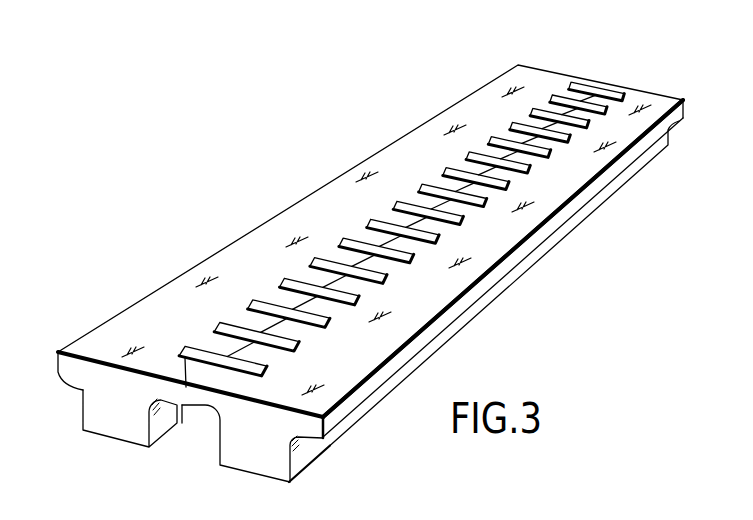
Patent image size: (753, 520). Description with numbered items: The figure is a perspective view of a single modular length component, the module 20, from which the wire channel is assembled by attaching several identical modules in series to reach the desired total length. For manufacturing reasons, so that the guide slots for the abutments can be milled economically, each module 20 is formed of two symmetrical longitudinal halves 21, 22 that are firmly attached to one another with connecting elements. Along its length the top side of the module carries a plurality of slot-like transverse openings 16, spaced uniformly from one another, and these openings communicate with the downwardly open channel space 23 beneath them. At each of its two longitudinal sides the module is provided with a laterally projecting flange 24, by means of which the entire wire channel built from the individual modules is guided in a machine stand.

The slot-like transverse openings 16 is at (188, 348).
The module 20 is at (545, 267).
The longitudinal half 21 is at (530, 78).
The longitudinal half 22 is at (639, 100).
The downwardly open channel space 23 is at (200, 442).
The laterally projecting flange 24 is at (58, 352).